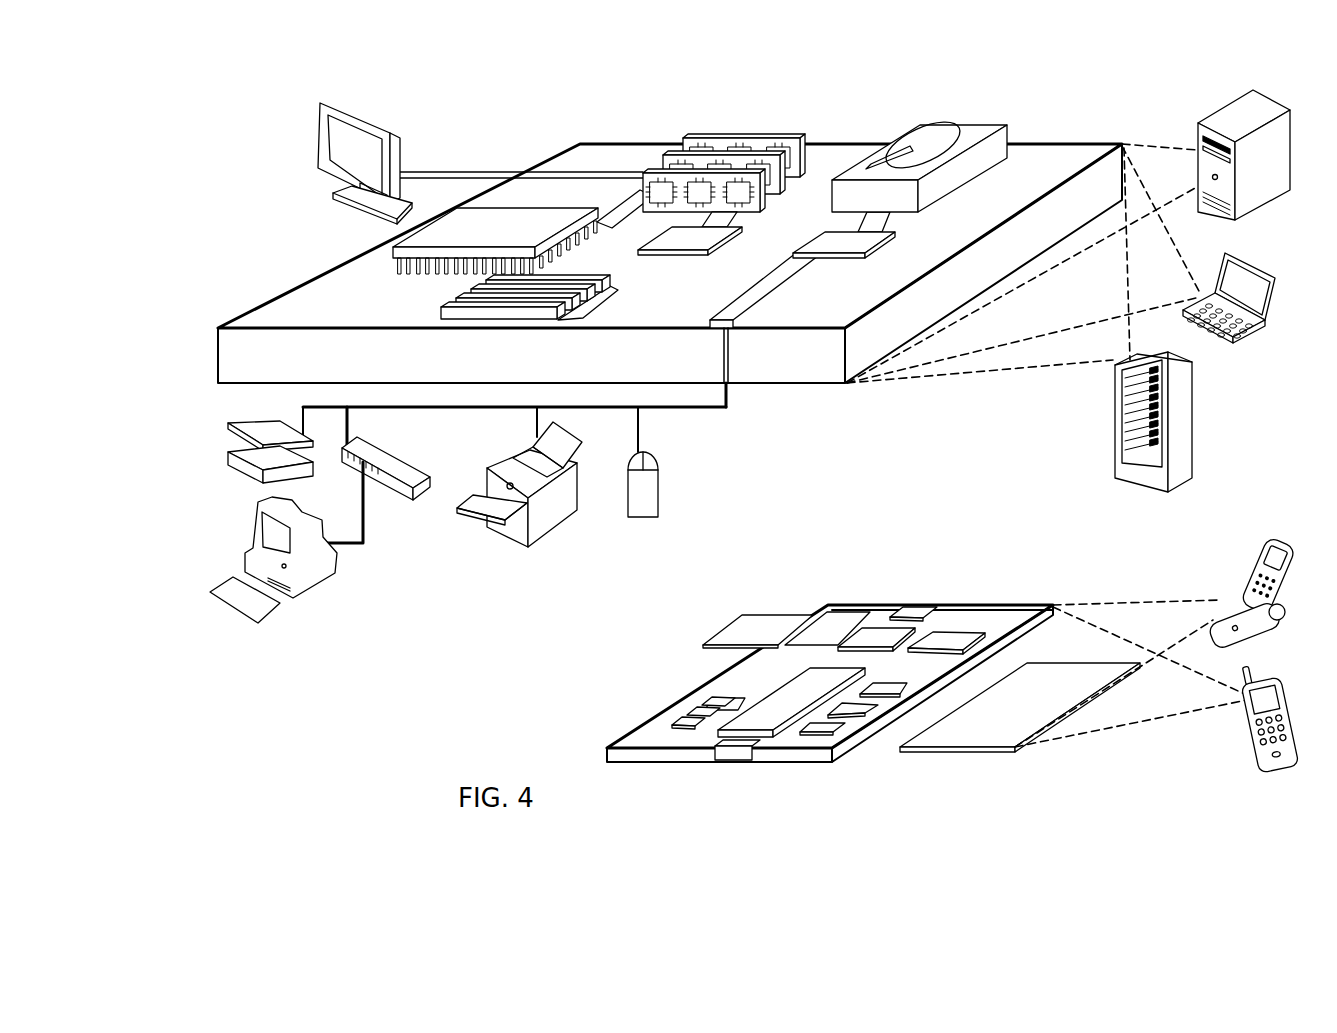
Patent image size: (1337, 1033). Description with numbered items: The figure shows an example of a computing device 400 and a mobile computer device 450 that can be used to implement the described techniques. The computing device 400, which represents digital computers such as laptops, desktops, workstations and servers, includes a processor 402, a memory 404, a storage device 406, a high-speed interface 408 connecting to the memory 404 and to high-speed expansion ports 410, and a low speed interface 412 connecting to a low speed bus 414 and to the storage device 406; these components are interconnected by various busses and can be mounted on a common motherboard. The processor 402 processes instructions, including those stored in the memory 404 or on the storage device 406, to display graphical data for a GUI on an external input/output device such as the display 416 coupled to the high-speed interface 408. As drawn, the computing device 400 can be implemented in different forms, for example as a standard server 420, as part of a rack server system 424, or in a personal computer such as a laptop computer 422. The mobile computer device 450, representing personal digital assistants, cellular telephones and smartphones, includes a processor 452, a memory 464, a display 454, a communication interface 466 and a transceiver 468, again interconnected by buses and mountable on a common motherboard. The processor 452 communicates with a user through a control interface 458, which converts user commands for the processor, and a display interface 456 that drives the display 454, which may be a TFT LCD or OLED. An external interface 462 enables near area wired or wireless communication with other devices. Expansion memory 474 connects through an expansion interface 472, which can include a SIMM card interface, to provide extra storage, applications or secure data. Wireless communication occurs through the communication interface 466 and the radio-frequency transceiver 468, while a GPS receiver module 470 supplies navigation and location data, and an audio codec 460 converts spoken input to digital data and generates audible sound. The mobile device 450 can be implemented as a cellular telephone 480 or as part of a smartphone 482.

The computing device 400 is at (515, 108).
The processor 402 is at (393, 252).
The memory 404 is at (700, 137).
The storage device 406 is at (903, 127).
The high-speed interface 408 is at (670, 237).
The high-speed expansion ports 410 is at (463, 298).
The low speed interface 412 is at (847, 240).
The low speed bus 414 is at (735, 332).
The display 416 is at (320, 105).
The standard server 420 is at (1198, 130).
The laptop computer 422 is at (1225, 255).
The rack server system 424 is at (1115, 443).
The mobile computer device 450 is at (868, 565).
The processor 452 is at (764, 754).
The display 454 is at (1018, 755).
The display interface 456 is at (841, 737).
The control interface 458 is at (877, 716).
The audio codec 460 is at (889, 696).
The external interface 462 is at (737, 748).
The memory 464 is at (692, 718).
The communication interface 466 is at (878, 640).
The transceiver 468 is at (948, 640).
The GPS receiver module 470 is at (918, 615).
The expansion interface 472 is at (805, 614).
The expansion memory 474 is at (746, 616).
The cellular telephone 480 is at (1268, 550).
The smartphone 482 is at (1253, 680).